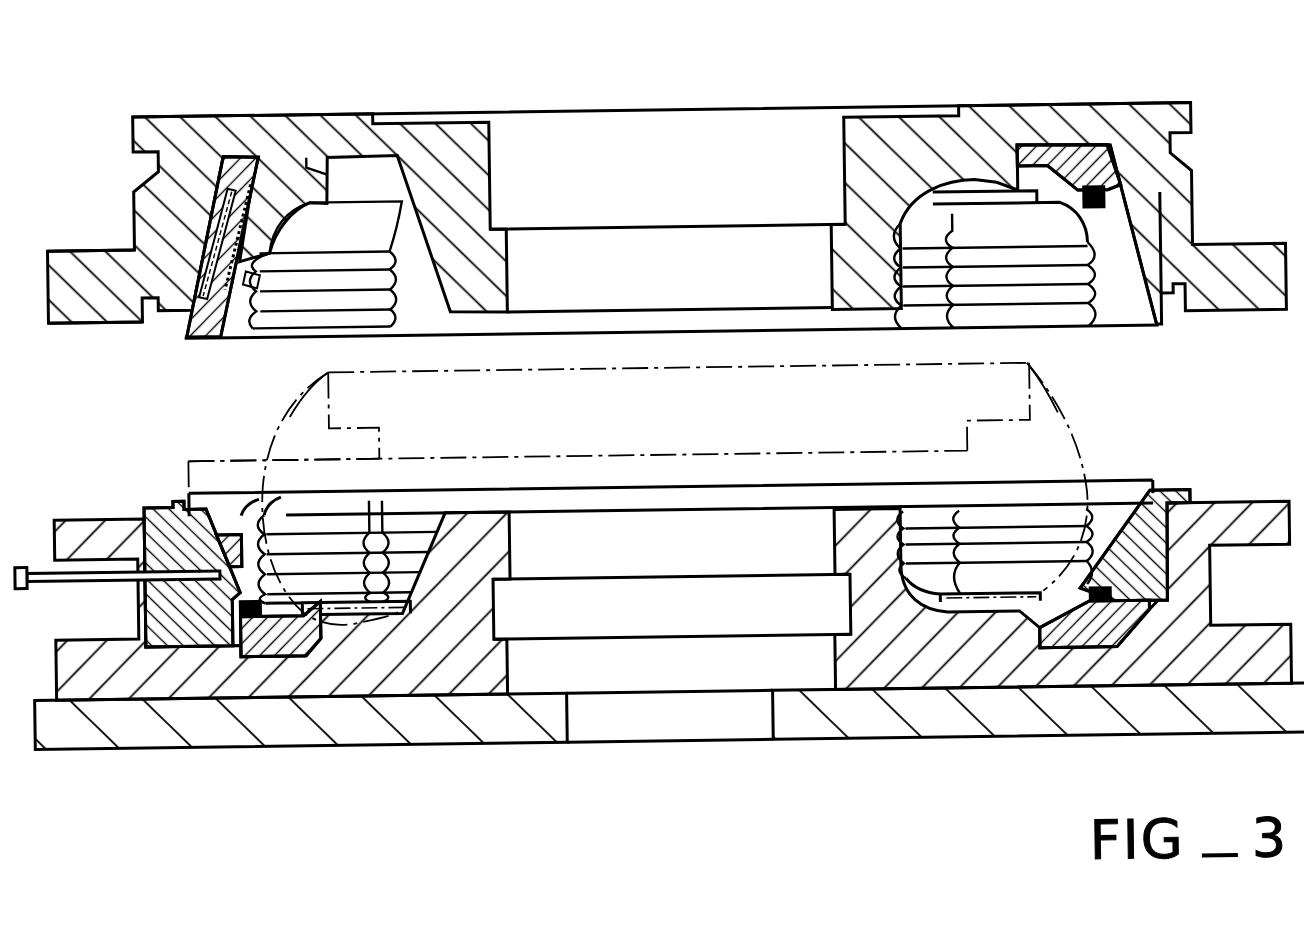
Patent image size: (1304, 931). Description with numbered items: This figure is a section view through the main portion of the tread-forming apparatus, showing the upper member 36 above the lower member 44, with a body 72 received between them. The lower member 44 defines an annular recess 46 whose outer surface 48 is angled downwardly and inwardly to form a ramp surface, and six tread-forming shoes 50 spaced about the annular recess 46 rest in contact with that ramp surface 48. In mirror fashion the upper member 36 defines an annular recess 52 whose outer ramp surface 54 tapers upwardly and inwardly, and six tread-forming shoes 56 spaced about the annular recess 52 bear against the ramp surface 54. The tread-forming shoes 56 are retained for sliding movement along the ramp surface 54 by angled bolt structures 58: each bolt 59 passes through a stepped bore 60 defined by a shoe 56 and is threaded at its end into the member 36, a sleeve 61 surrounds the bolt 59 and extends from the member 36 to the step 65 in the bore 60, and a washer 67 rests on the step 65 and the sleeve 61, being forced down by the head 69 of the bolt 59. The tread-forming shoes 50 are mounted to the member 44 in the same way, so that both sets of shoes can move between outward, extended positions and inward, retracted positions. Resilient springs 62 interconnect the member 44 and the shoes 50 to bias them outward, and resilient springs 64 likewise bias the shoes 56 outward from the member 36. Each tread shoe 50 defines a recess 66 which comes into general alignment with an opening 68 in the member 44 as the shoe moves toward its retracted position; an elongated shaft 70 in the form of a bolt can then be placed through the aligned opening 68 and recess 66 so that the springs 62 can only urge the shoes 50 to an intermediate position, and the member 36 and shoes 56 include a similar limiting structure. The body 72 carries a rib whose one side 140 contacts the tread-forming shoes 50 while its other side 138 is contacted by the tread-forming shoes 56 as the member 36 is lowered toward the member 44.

The upper member 36 is at (316, 100).
The lower member 44 is at (150, 756).
The annular recess 46 is at (927, 540).
The outer surface 48 is at (201, 627).
The tread-forming shoes 50 is at (784, 498).
The annular recess 52 is at (414, 286).
The outer ramp surface 54 is at (1128, 286).
The tread-forming shoes 56 is at (213, 332).
The angled bolt structures 58 is at (208, 244).
The bolt 59 is at (258, 206).
The stepped bore 60 is at (198, 337).
The sleeve 61 is at (214, 251).
The resilient springs 62 is at (240, 613).
The resilient springs 64 is at (1100, 194).
The step 65 is at (252, 284).
The recess 66 is at (167, 548).
The washer 67 is at (188, 271).
The opening 68 is at (150, 555).
The head 69 is at (189, 305).
The elongated shaft 70 is at (72, 580).
The body 72 is at (389, 440).
The other side of the rib 138 is at (218, 442).
The one side of the rib 140 is at (266, 522).